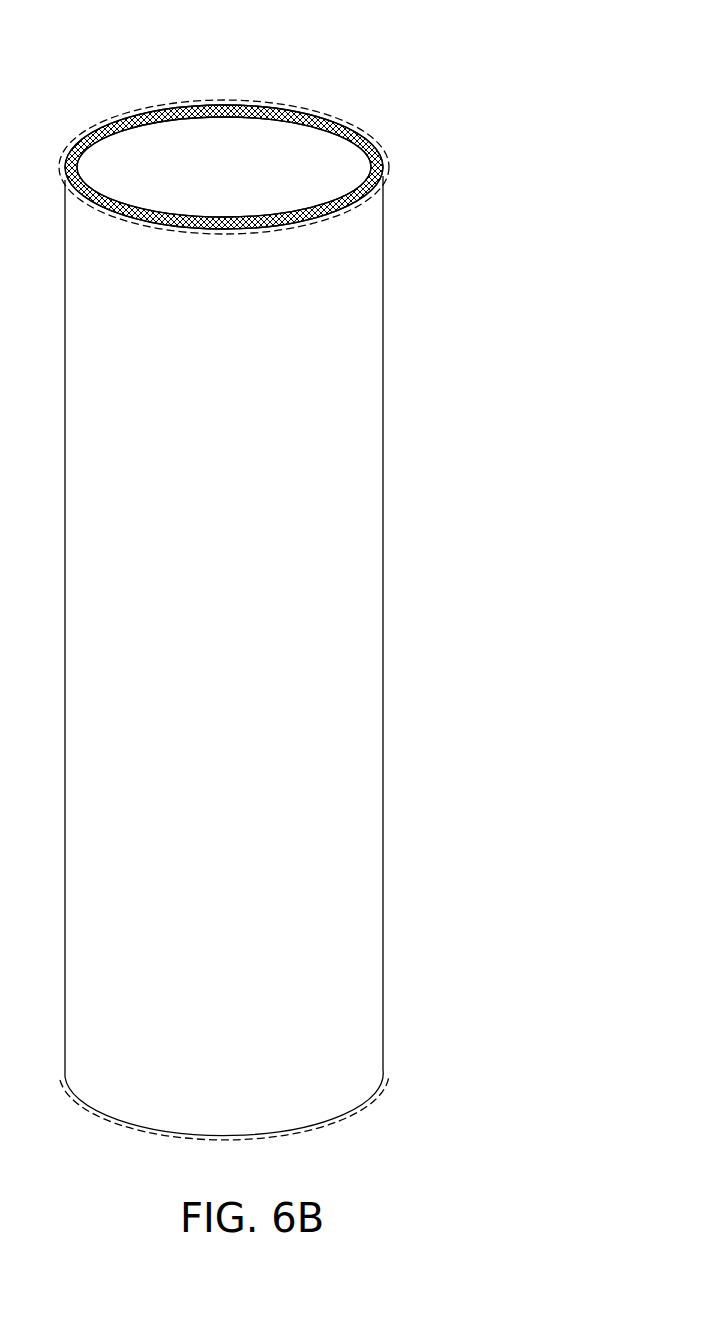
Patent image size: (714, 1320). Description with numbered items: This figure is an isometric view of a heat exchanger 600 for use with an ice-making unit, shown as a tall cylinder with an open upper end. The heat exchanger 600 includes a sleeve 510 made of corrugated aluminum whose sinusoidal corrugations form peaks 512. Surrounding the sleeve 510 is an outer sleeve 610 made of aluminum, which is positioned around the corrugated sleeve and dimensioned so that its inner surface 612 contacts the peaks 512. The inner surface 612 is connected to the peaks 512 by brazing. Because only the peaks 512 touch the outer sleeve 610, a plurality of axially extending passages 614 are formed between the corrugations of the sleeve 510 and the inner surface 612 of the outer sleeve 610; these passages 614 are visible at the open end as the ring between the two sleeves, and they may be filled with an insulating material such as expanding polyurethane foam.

The heat exchanger 600 is at (470, 82).
The outer sleeve 610 is at (355, 460).
The peaks 512 is at (87, 138).
The axially extending passages 614 is at (384, 177).
The inner surface 612 is at (213, 107).
The sleeve 510 is at (302, 113).